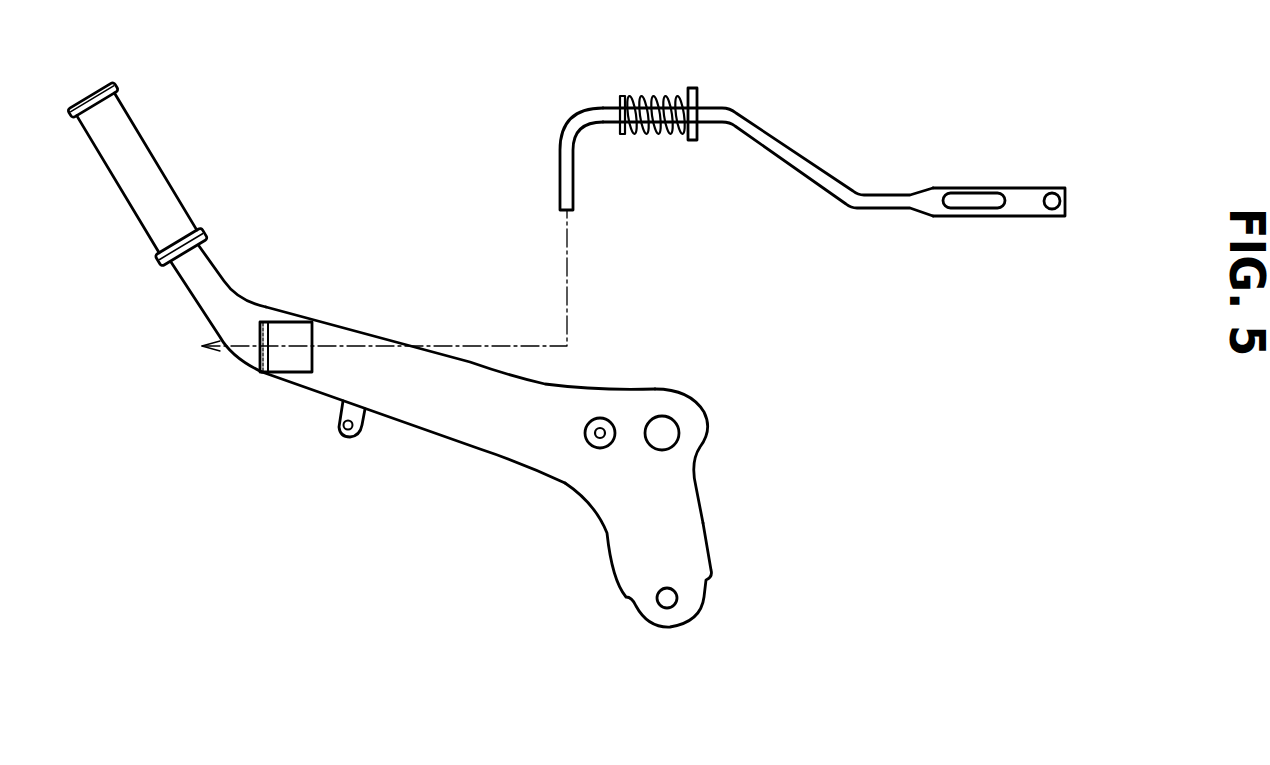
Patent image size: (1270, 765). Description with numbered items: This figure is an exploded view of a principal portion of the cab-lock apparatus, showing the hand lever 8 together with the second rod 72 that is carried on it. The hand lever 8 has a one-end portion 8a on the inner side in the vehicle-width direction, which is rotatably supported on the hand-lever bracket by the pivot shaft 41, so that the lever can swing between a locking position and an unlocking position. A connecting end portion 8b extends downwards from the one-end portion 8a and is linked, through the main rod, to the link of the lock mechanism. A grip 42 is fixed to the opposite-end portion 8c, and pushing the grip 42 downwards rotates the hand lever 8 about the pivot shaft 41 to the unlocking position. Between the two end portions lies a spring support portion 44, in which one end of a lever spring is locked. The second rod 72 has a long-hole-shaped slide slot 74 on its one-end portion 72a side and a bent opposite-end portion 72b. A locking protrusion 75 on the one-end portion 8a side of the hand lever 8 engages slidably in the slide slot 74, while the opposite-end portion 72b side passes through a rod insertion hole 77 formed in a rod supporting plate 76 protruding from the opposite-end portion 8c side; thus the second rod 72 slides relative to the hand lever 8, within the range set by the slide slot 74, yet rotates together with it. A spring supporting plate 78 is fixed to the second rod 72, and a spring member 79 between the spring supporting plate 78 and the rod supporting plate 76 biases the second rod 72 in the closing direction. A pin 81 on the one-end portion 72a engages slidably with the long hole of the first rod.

The hand lever 8 is at (468, 418).
The one-end portion 8a is at (687, 415).
The connecting end portion 8b is at (622, 593).
The opposite-end portion 8c is at (173, 274).
The pivot shaft 41 is at (674, 428).
The grip 42 is at (160, 160).
The spring support portion 44 is at (348, 438).
The second rod 72 is at (815, 149).
The one-end portion 72a is at (1001, 194).
The opposite-end portion 72b is at (575, 188).
The slide slot 74 is at (977, 203).
The locking protrusion 75 is at (601, 421).
The rod supporting plate 76 is at (292, 301).
The rod insertion hole 77 is at (276, 342).
The spring supporting plate 78 is at (689, 88).
The spring member 79 is at (622, 96).
The pin 81 is at (1053, 208).